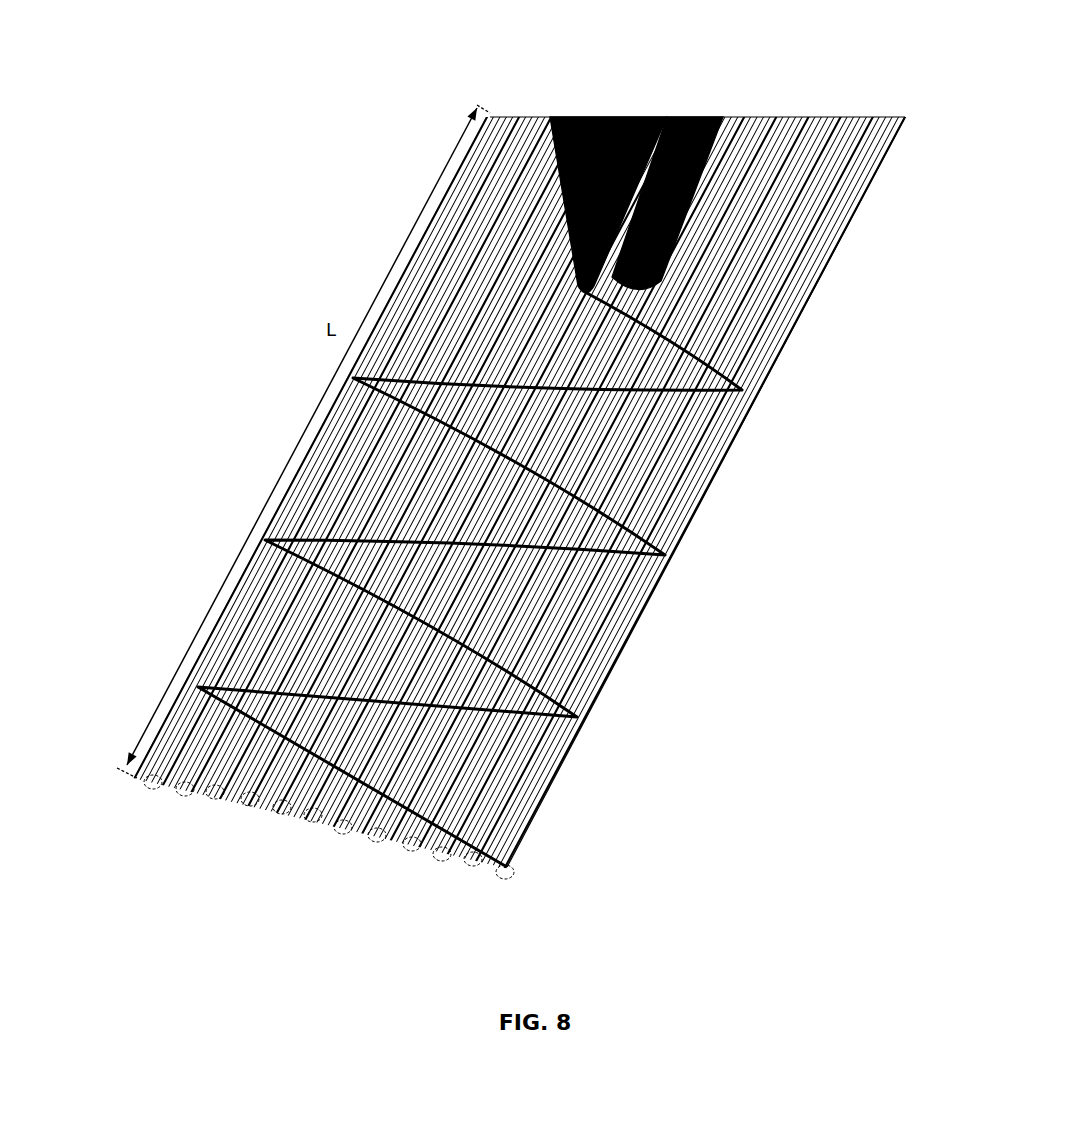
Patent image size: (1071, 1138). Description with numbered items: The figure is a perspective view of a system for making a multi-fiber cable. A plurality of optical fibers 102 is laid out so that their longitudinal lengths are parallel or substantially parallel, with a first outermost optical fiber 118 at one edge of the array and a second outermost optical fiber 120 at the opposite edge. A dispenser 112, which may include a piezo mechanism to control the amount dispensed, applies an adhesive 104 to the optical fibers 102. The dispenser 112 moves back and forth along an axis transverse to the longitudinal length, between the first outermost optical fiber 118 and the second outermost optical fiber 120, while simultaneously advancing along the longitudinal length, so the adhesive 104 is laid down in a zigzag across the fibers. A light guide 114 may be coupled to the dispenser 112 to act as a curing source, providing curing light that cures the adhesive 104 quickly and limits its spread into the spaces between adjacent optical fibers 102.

The optical fibers 102 is at (505, 880).
The adhesive 104 is at (577, 717).
The dispenser 112 is at (592, 117).
The light guide 114 is at (705, 117).
The first outermost optical fiber 118 is at (543, 833).
The second outermost optical fiber 120 is at (148, 761).